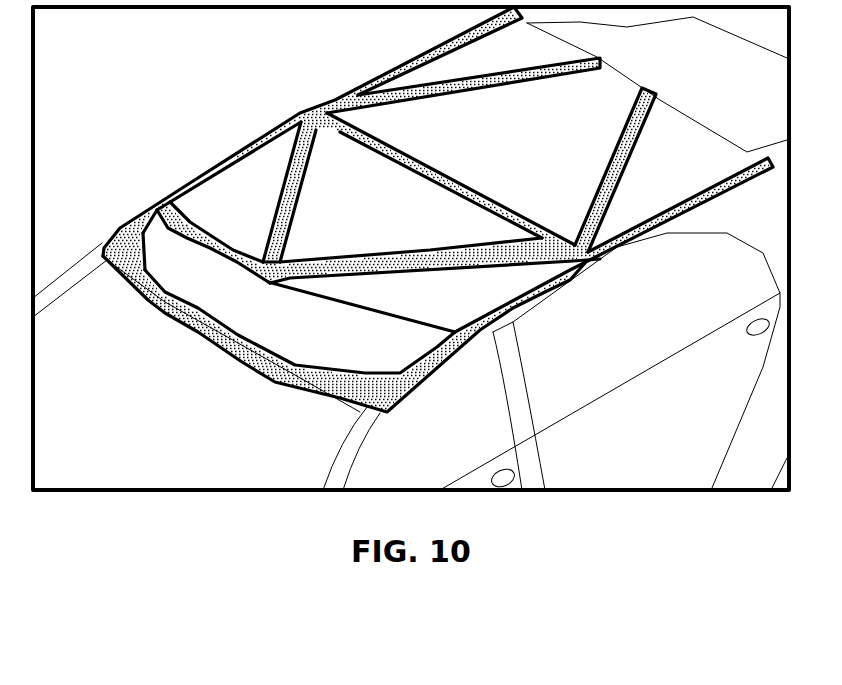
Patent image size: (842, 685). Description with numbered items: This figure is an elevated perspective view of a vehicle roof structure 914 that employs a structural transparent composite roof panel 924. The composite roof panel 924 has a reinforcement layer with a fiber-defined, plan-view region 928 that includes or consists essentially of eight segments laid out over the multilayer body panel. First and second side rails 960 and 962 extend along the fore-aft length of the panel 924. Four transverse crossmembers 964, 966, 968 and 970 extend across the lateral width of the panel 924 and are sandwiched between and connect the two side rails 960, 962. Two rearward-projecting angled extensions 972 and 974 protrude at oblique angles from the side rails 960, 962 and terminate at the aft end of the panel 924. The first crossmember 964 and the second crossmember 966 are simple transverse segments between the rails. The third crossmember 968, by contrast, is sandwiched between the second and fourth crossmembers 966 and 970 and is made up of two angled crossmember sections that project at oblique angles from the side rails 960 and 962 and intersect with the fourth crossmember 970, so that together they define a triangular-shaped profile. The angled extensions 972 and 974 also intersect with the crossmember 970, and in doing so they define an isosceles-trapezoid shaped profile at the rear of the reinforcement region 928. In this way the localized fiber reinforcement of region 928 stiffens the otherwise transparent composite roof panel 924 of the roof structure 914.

The vehicle roof structure 914 is at (180, 102).
The structural transparent composite roof panel 924 is at (212, 340).
The fiber-defined plan-view region 928 is at (295, 105).
The first side rail 960 is at (632, 240).
The second side rail 962 is at (367, 82).
The first crossmember 964 is at (307, 373).
The second crossmember 966 is at (205, 237).
The third crossmember 968 is at (293, 167).
The fourth crossmember 970 is at (453, 187).
The first rearward-projecting angled extension 972 is at (623, 147).
The second rearward-projecting angled extension 974 is at (453, 83).